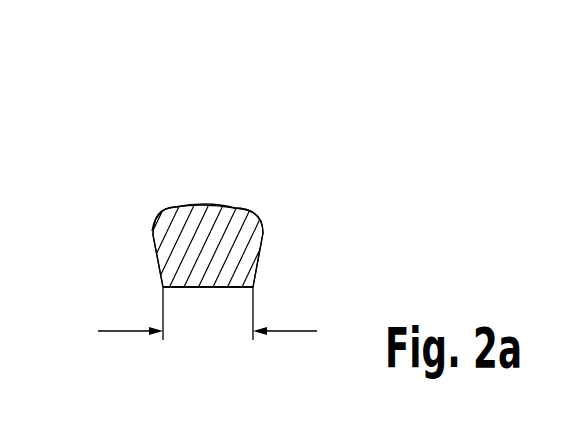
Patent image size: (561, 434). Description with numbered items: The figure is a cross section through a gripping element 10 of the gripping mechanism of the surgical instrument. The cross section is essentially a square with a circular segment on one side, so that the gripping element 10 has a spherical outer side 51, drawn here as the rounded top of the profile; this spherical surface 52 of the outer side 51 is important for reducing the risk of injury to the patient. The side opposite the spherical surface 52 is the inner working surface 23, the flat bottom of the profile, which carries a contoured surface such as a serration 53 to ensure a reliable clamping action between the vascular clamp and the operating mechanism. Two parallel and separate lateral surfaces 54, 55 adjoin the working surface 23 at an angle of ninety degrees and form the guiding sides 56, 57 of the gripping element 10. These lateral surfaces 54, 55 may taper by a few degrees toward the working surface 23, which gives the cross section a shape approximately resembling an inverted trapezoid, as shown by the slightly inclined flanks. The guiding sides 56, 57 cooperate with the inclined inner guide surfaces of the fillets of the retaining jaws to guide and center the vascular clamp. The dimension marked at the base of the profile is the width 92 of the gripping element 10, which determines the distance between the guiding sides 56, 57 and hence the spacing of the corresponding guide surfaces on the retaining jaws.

The gripping element 10 is at (311, 138).
The spherical outer side 51 is at (170, 192).
The spherical surface 52 is at (235, 206).
The serration 53 is at (207, 288).
The lateral surface 54 is at (146, 274).
The lateral surface 55 is at (276, 261).
The guiding side 56 is at (150, 237).
The guiding side 57 is at (265, 233).
The inner working surface 23 is at (176, 304).
The width 92 is at (233, 330).